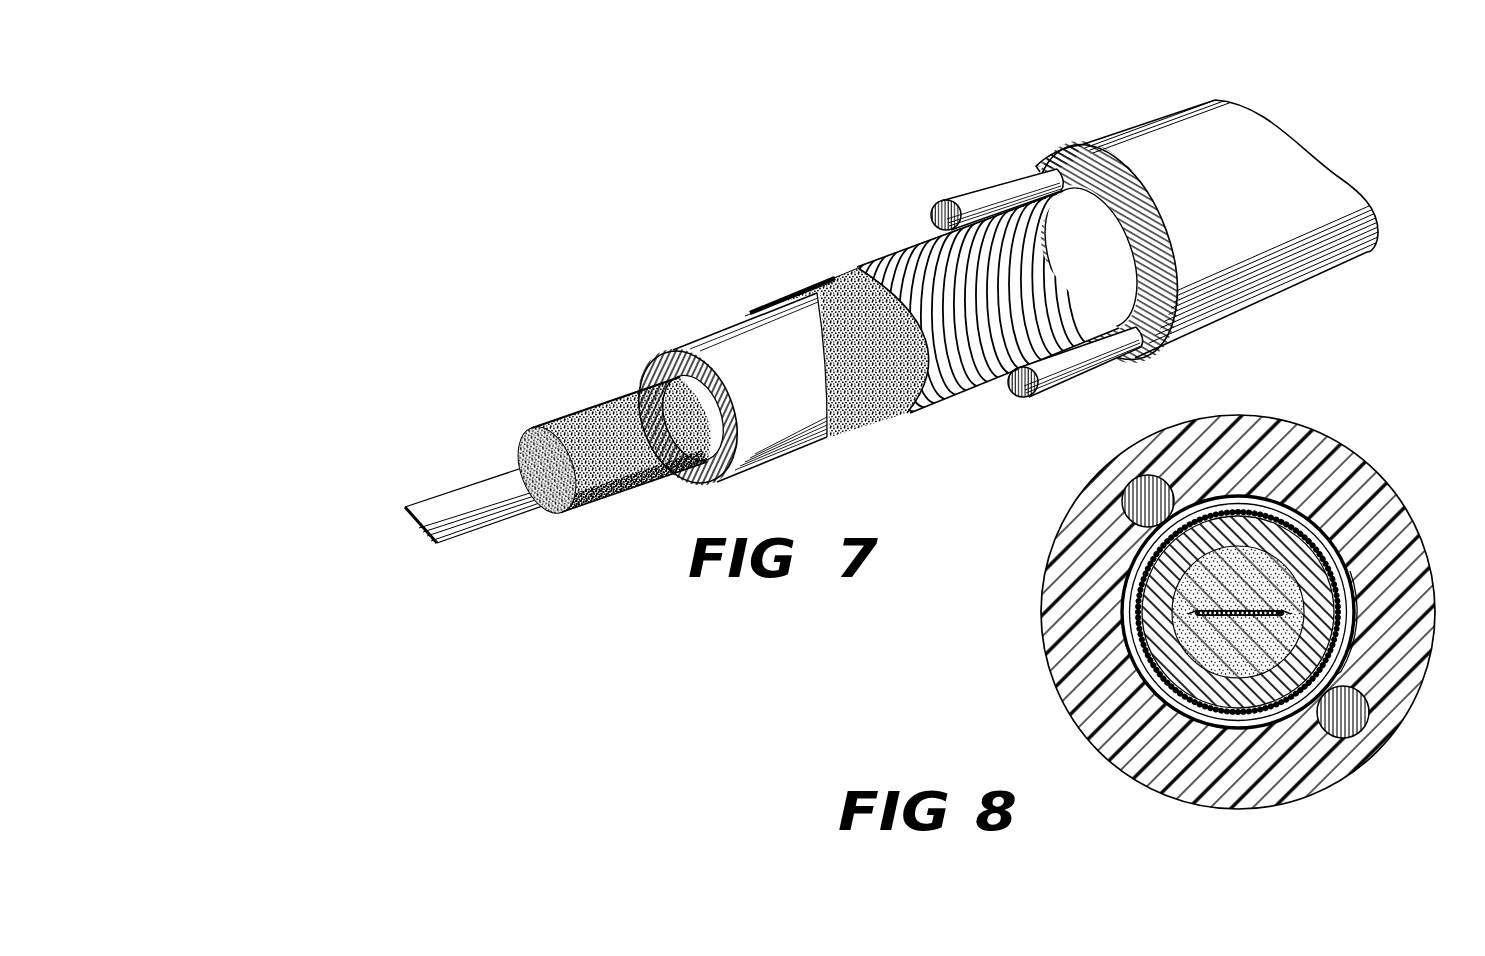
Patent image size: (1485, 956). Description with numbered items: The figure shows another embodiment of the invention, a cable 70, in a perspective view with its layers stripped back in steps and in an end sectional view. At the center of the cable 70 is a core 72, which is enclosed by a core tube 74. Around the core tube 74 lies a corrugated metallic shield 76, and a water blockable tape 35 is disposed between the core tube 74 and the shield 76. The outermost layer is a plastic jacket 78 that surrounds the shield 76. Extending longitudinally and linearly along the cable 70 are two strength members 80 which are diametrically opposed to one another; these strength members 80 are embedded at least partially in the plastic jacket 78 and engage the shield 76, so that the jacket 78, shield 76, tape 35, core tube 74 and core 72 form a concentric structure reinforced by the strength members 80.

In FIG. 7, the water blockable tape 35 is at (780, 300).
In FIG. 8, the water blockable tape 35 is at (1209, 715).
In FIG. 7, the cable 70 is at (891, 317).
In FIG. 8, the cable 70 is at (1251, 602).
In FIG. 7, the core 72 is at (537, 421).
In FIG. 8, the core 72 is at (1164, 619).
In FIG. 7, the core tube 74 is at (742, 463).
In FIG. 8, the core tube 74 is at (1341, 562).
In FIG. 7, the corrugated metallic shield 76 is at (905, 248).
In FIG. 8, the corrugated metallic shield 76 is at (1148, 543).
In FIG. 7, the plastic jacket 78 is at (1151, 344).
In FIG. 8, the plastic jacket 78 is at (1420, 567).
In FIG. 7, the strength members 80 is at (937, 207).
In FIG. 8, the strength members 80 is at (1167, 496).